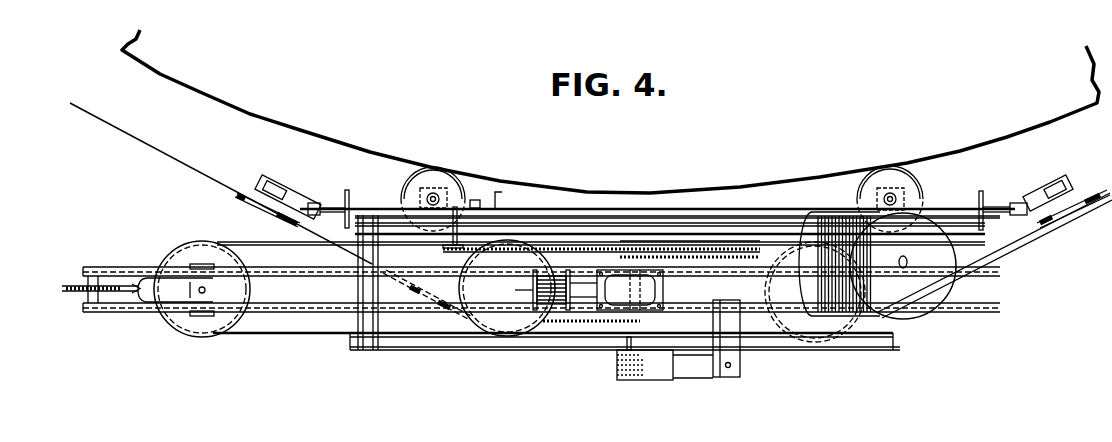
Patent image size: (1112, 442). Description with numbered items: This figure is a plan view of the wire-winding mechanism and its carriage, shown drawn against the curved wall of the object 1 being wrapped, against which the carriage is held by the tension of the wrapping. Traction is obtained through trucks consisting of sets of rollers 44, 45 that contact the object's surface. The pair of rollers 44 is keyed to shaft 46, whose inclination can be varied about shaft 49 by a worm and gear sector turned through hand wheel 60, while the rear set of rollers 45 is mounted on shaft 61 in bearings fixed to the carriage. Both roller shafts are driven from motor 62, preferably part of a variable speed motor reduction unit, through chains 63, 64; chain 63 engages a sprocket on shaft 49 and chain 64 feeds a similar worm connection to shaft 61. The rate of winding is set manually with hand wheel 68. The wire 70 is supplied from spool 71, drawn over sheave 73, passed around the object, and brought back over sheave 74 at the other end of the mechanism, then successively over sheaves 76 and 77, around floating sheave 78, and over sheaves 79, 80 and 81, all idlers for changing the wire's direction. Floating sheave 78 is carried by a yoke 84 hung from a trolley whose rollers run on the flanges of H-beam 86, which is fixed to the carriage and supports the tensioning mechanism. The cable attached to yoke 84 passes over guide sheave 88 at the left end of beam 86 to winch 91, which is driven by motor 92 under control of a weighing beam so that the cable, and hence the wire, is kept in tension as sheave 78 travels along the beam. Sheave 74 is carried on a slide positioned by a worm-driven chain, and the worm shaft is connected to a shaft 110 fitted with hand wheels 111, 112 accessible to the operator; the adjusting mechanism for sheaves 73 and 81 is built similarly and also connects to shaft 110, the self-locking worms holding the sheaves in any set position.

The boat hull 1 is at (268, 112).
The rollers 44 is at (438, 174).
The rollers 45 is at (886, 178).
The shaft 46 is at (447, 193).
The shaft 49 is at (448, 246).
The hand wheel 60 is at (502, 192).
The shaft 61 is at (897, 197).
The motor 62 is at (702, 372).
The chain 63 is at (585, 250).
The chain 64 is at (753, 257).
The hand wheel 68 is at (640, 360).
The wire 70 is at (986, 258).
The spool 71 is at (922, 300).
The sheave 73 is at (1048, 227).
The sheave 74 is at (268, 212).
The sheave 76 is at (468, 318).
The sheave 77 is at (512, 320).
The floating sheave 78 is at (206, 325).
The sheave 79 is at (805, 320).
The sheave 80 is at (902, 316).
The sheave 81 is at (1038, 222).
The yoke 84 is at (170, 287).
The H-beam 86 is at (283, 272).
The guide sheave 88 is at (76, 292).
The winch 91 is at (512, 294).
The motor 92 is at (627, 293).
The shaft 110 is at (375, 217).
The hand wheel 111 is at (357, 184).
The hand wheel 112 is at (984, 192).